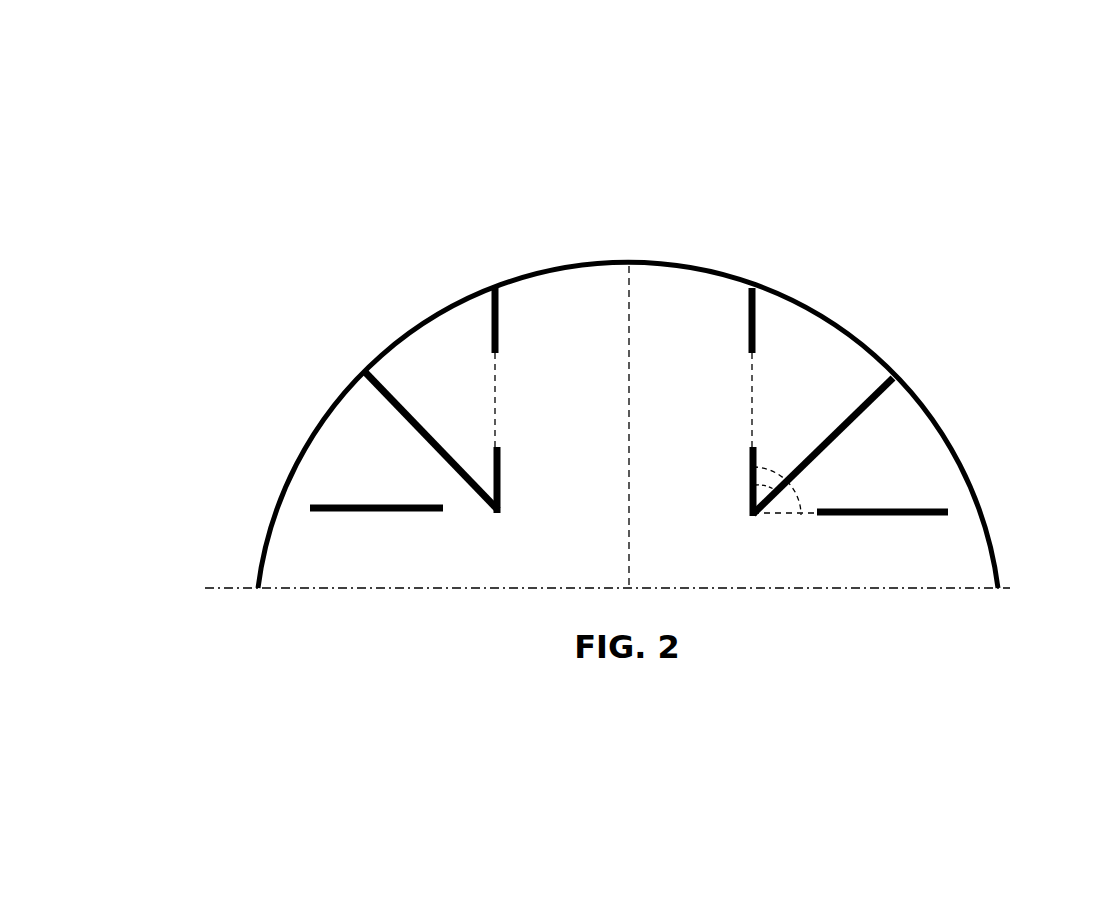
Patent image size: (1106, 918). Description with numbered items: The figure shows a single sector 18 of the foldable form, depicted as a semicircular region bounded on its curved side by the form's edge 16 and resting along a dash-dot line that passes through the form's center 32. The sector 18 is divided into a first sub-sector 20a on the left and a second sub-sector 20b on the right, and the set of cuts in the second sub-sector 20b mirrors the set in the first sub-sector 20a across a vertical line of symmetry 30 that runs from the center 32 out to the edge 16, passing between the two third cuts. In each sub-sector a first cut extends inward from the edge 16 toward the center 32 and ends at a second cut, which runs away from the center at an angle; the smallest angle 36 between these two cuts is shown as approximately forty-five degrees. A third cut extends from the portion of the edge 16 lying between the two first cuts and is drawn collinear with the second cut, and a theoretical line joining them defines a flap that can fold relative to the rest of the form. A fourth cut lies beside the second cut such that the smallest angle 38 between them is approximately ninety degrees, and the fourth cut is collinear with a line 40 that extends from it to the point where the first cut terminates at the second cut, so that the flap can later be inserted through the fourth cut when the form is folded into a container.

The sector 18 is at (542, 137).
The edge 16 is at (605, 265).
The first sub-sector 20a is at (340, 297).
The second sub-sector 20b is at (937, 293).
The line of symmetry 30 is at (635, 303).
The center 32 is at (606, 570).
The smallest angle between first and second cuts 36 is at (777, 442).
The smallest angle between second and fourth cuts 38 is at (830, 493).
The line 40 is at (783, 515).